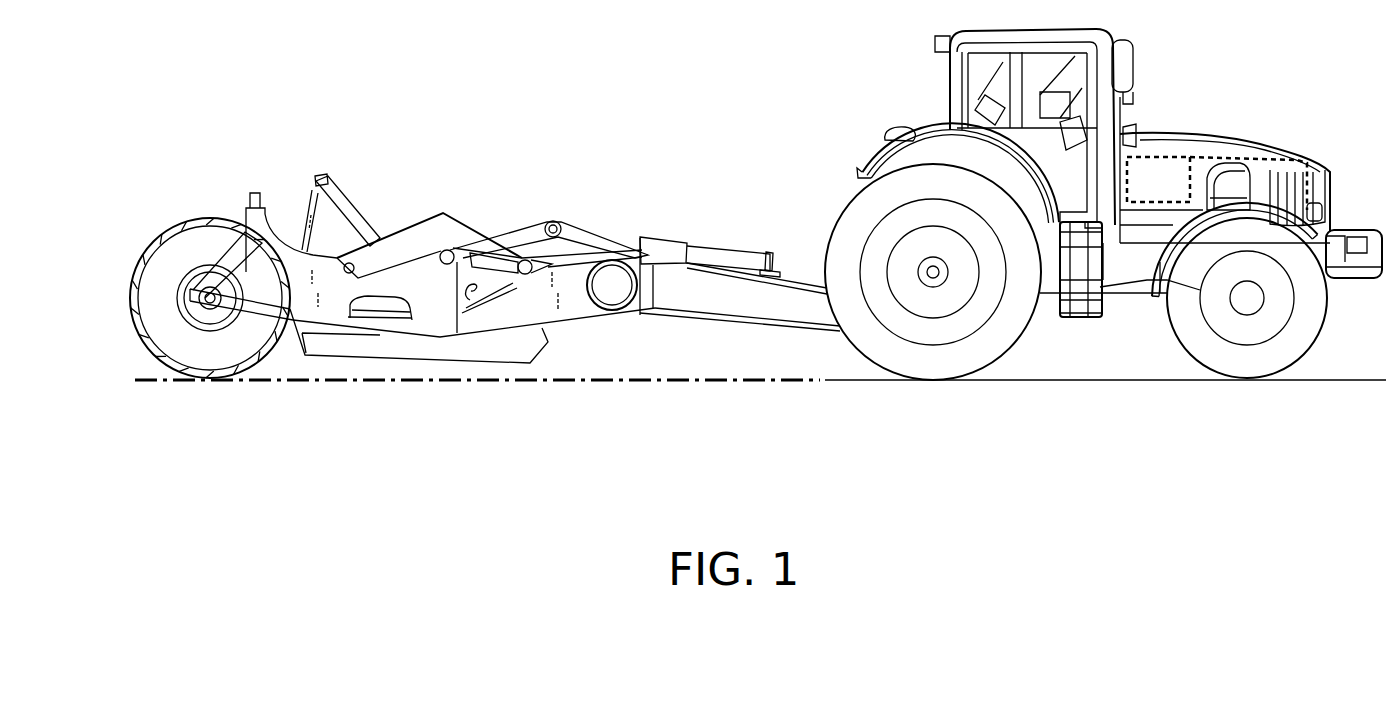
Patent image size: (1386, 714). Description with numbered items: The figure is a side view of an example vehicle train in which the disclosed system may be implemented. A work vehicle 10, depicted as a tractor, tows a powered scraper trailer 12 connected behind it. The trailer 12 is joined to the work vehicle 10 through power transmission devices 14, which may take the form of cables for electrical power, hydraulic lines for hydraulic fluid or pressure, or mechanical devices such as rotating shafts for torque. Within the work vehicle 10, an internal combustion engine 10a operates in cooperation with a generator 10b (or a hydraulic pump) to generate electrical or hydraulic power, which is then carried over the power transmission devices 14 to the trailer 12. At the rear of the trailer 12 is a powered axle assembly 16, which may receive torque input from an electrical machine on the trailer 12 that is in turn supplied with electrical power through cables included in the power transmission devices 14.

The work vehicle 10 is at (882, 133).
The engine 10a is at (1247, 157).
The generator 10b is at (1148, 152).
The powered scraper trailer 12 is at (474, 213).
The power transmission devices 14 is at (707, 240).
The powered axle assembly 16 is at (227, 205).